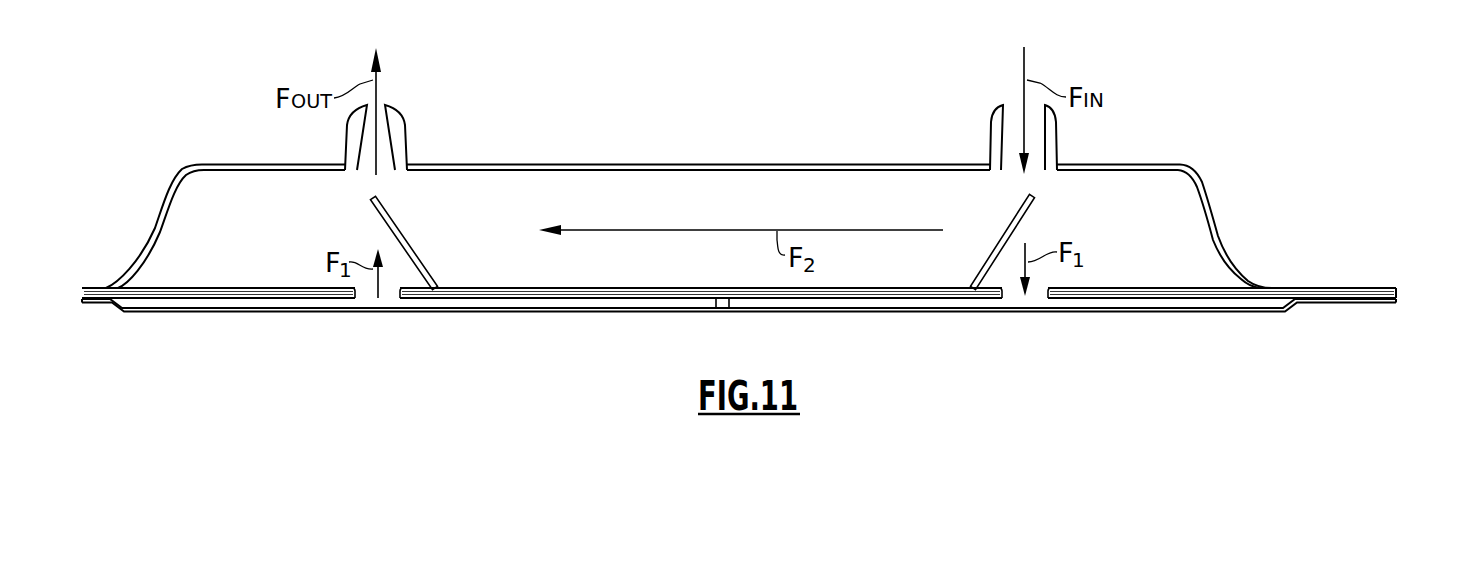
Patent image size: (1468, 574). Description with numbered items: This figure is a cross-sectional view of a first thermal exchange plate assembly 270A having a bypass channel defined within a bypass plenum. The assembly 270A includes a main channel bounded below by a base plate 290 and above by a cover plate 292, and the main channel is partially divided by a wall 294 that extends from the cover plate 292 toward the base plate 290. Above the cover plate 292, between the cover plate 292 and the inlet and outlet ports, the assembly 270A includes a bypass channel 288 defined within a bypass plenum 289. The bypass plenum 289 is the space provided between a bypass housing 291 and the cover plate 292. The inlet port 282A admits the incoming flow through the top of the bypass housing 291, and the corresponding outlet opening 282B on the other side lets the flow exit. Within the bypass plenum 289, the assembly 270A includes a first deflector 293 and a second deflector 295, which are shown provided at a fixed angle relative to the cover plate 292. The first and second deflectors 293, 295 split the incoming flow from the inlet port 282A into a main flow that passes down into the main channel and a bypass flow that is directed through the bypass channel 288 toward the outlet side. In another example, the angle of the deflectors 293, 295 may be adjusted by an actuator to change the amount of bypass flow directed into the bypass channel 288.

The first thermal exchange plate assembly 270A is at (1346, 218).
The inlet port 282A is at (1058, 124).
The outlet fins 282B is at (403, 133).
The bypass channel 288 is at (743, 217).
The bypass plenum 289 is at (1184, 223).
The base plate 290 is at (160, 313).
The bypass housing 291 is at (800, 163).
The cover plate 292 is at (557, 293).
The first deflector 293 is at (1003, 230).
The wall 294 is at (717, 307).
The second deflector 295 is at (397, 223).